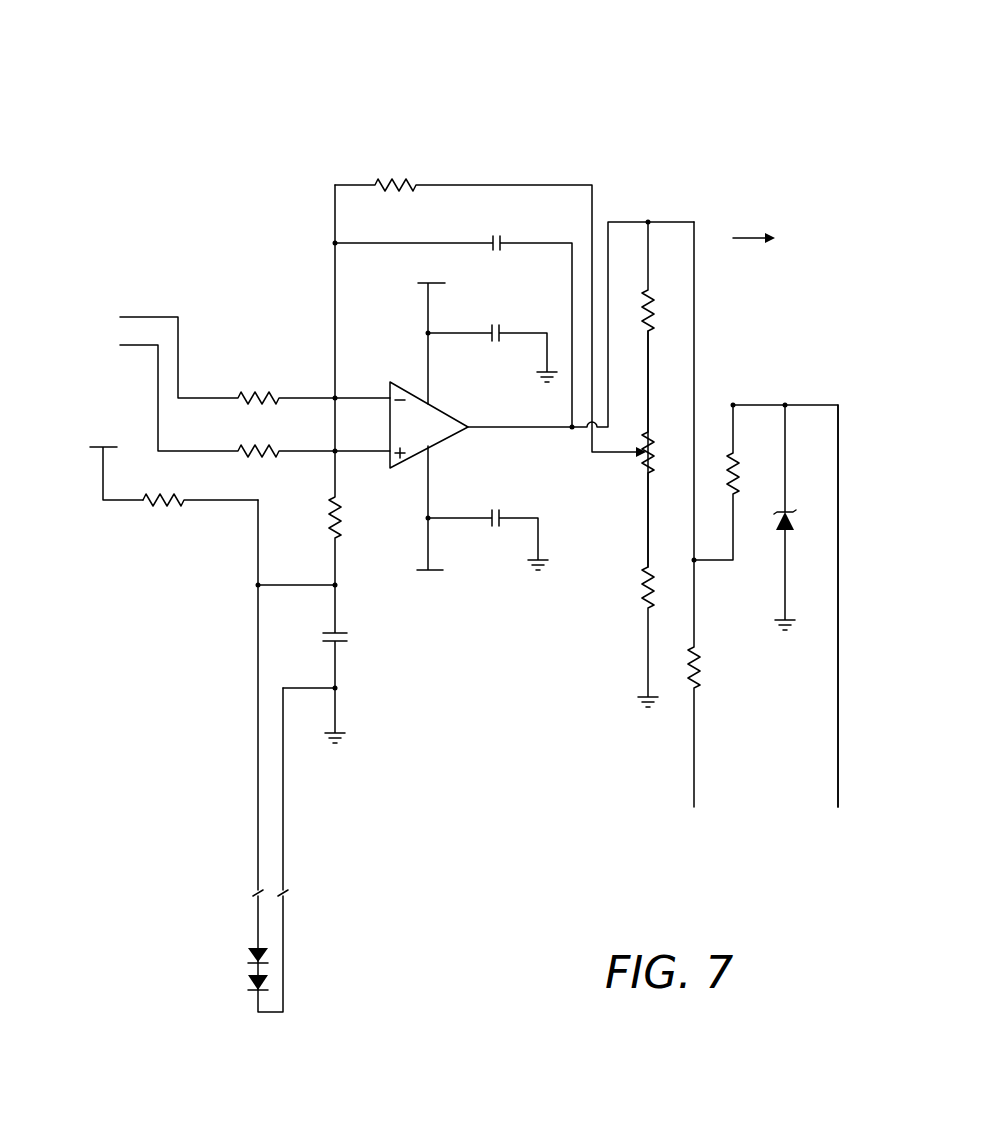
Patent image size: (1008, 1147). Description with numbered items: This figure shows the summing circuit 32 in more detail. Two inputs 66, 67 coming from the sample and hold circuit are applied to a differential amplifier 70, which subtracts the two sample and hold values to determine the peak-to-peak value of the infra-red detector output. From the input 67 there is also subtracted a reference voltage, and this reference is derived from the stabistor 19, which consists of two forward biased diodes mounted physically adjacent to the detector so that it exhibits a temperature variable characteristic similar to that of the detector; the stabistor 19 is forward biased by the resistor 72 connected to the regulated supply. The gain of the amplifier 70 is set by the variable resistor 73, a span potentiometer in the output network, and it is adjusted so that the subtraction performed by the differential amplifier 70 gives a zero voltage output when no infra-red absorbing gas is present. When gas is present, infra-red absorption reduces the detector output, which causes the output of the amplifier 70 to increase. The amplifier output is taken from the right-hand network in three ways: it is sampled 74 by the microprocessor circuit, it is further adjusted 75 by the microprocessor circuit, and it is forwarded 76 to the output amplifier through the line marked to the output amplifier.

The summing circuit 32 is at (681, 92).
The input 66 is at (118, 317).
The input 67 is at (120, 345).
The differential amplifier 70 is at (396, 386).
The resistor 72 is at (140, 504).
The variable resistor 73 is at (642, 478).
The sampled output 74 is at (694, 746).
The adjusted output 75 is at (838, 746).
The forwarded output 76 is at (733, 238).
The stabistor 19 is at (240, 969).